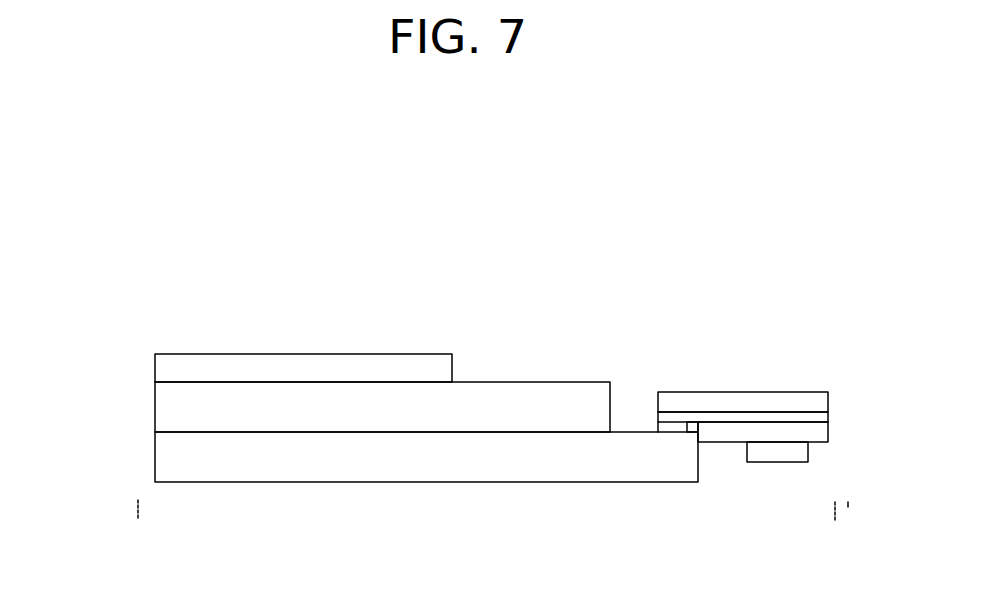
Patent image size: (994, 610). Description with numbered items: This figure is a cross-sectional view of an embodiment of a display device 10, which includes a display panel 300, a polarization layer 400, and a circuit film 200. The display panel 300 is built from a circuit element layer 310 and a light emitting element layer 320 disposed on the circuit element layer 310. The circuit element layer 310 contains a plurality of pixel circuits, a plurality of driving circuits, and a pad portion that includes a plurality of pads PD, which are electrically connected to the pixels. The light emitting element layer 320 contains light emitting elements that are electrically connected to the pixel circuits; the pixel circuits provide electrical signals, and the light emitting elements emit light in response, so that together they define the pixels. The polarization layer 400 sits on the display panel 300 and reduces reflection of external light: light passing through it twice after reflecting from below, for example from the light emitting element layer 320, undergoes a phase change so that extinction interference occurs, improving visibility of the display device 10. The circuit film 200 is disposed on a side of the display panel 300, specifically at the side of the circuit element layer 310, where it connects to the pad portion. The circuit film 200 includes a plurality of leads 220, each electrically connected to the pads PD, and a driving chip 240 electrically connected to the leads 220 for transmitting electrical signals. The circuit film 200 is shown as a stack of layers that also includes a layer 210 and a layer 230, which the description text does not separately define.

The display device 10 is at (657, 211).
The circuit film 200 is at (838, 275).
The base layer 210 is at (668, 396).
The leads 220 is at (717, 413).
The bonding layer 230 is at (767, 430).
The driving chip 240 is at (793, 452).
The display panel 300 is at (72, 397).
The circuit element layer 310 is at (155, 457).
The light emitting element layer 320 is at (155, 407).
The polarization layer 400 is at (155, 368).
The pads PD is at (673, 433).